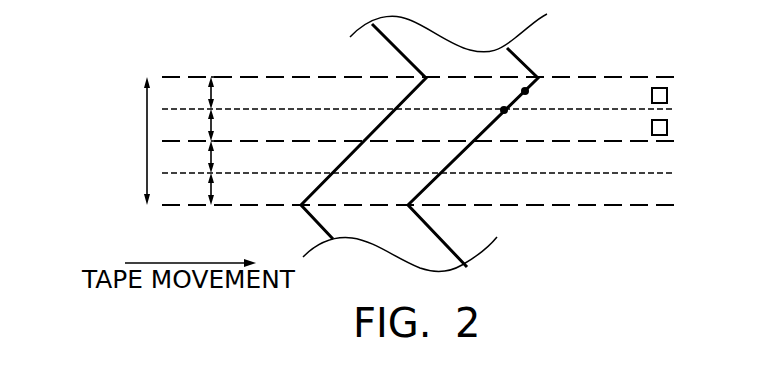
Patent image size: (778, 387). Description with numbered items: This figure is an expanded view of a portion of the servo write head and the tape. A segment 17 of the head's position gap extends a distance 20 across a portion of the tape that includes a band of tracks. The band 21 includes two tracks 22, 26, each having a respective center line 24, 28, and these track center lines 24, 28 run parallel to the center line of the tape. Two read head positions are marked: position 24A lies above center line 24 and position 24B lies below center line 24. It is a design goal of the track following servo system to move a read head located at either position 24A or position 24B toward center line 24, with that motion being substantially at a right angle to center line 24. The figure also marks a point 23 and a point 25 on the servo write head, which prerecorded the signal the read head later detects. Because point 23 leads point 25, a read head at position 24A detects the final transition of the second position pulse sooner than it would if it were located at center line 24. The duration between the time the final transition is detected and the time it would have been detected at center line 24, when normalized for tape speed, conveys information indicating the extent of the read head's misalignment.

The segment of position gap 17 is at (382, 122).
The distance 20 is at (146, 140).
The band 21 is at (226, 49).
The track 22 is at (210, 104).
The point 23 is at (527, 92).
The center line 24 is at (297, 109).
The read head position 24A is at (668, 96).
The read head position 24B is at (668, 127).
The point 25 is at (506, 112).
The track 26 is at (210, 169).
The center line 28 is at (297, 173).